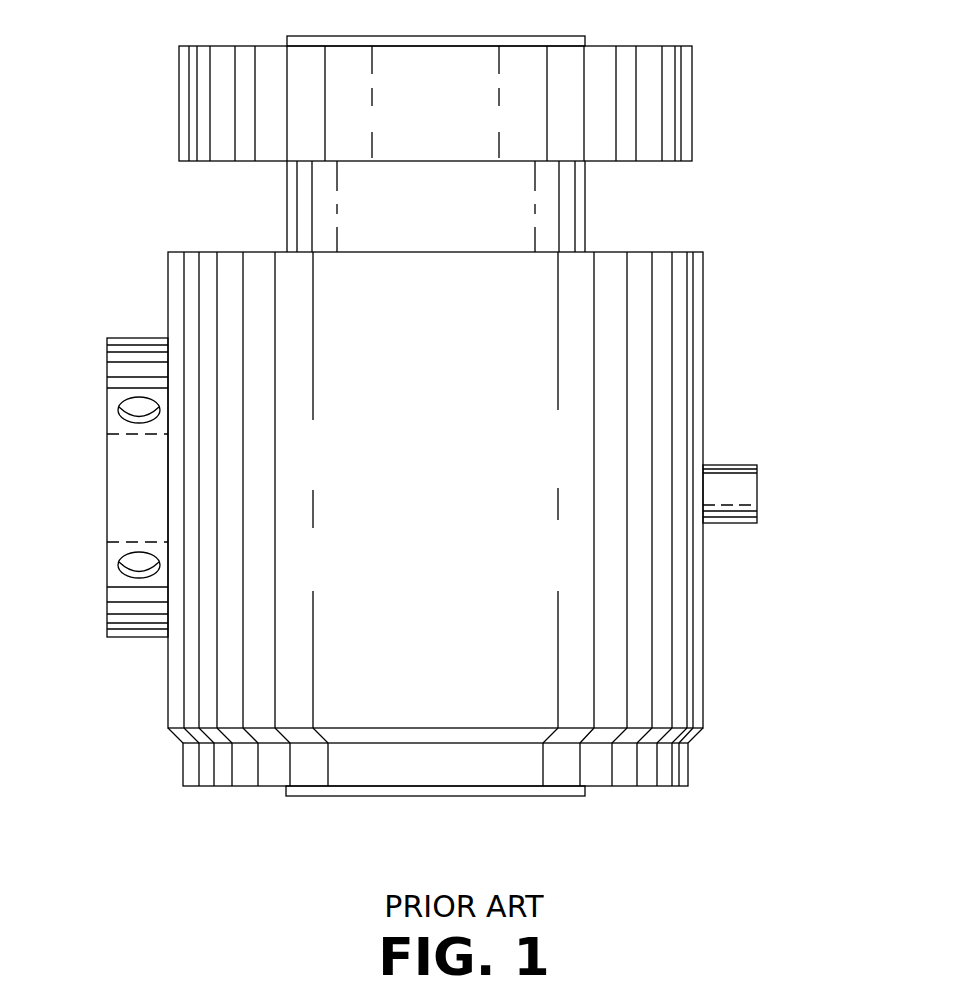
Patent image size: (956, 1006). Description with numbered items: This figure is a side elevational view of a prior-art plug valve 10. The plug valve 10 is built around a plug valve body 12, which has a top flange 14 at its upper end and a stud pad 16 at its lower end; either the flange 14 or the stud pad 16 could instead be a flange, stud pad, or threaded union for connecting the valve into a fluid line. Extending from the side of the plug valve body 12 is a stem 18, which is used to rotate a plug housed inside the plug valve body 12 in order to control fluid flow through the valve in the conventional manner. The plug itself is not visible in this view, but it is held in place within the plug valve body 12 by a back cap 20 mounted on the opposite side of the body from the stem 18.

The plug valve 10 is at (441, 456).
The plug valve body 12 is at (675, 312).
The top flange 14 is at (202, 109).
The stud pad 16 is at (237, 786).
The stem 18 is at (729, 472).
The back cap 20 is at (120, 463).